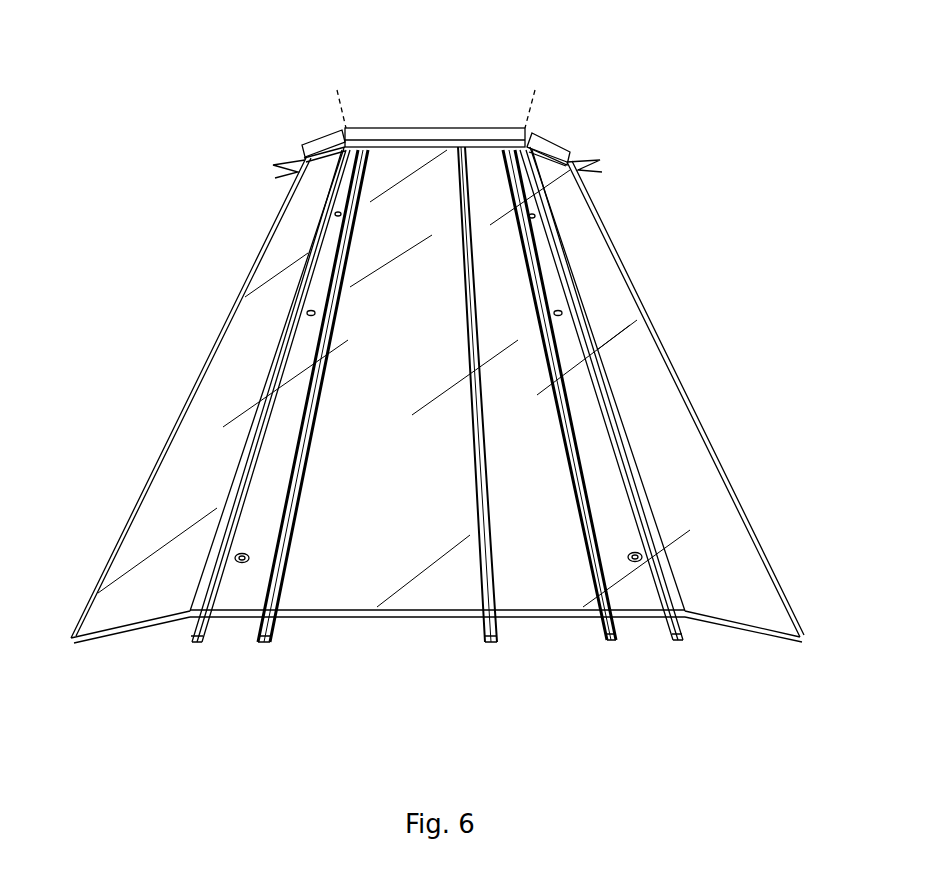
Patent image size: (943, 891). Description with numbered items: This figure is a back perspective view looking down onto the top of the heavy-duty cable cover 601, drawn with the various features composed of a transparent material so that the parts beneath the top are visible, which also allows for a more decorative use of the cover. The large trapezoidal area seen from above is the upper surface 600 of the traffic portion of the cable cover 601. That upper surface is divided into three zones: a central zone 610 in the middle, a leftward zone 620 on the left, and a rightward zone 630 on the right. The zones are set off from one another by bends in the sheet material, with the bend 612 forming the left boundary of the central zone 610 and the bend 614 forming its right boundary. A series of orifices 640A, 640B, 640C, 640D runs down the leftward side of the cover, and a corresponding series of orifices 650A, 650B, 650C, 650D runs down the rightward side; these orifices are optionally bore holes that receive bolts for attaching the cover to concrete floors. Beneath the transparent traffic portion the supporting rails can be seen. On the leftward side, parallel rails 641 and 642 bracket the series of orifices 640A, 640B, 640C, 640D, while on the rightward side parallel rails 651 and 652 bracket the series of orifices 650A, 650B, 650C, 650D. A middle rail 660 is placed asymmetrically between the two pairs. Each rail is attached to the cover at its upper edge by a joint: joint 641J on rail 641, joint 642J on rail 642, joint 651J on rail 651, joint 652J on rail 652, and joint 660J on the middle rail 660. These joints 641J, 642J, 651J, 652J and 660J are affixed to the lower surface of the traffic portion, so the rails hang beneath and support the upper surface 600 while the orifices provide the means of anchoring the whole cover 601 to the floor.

The upper surface 600 is at (315, 537).
The heavy-duty cable cover 601 is at (651, 268).
The central zone 610 is at (435, 128).
The bend 612 is at (337, 90).
The bend 614 is at (537, 90).
The leftward zone 620 is at (318, 127).
The rightward zone 630 is at (560, 130).
The orifice 640A is at (275, 172).
The orifice 640B is at (334, 215).
The orifice 640C is at (306, 313).
The orifice 640D is at (236, 556).
The orifice 650A is at (602, 172).
The orifice 650B is at (536, 216).
The orifice 650C is at (563, 313).
The orifice 650D is at (642, 554).
The rail 641 is at (190, 640).
The joint 641J is at (188, 620).
The rail 642 is at (270, 642).
The joint 642J is at (273, 620).
The middle rail 660 is at (482, 642).
The joint 660J is at (480, 620).
The rail 652 is at (603, 640).
The joint 652J is at (603, 617).
The rail 651 is at (688, 640).
The joint 651J is at (688, 620).